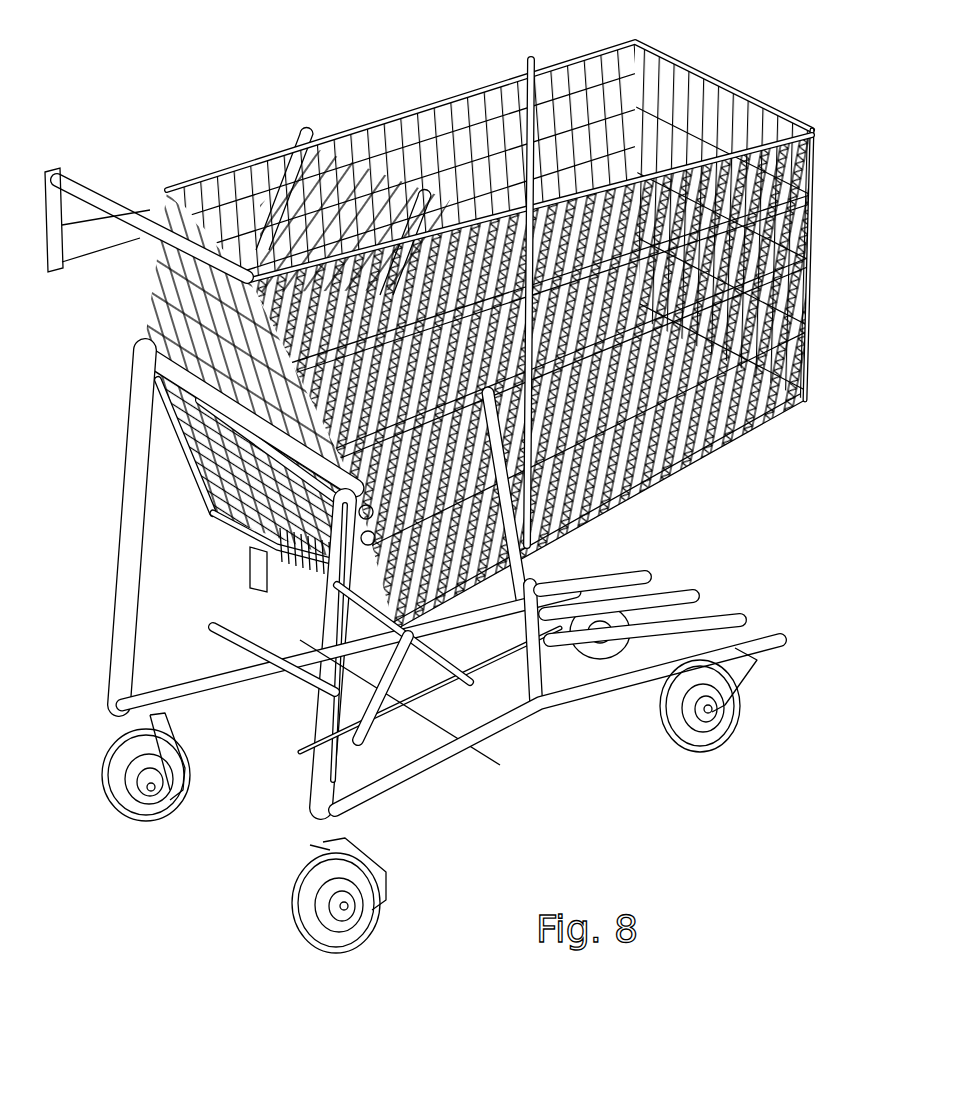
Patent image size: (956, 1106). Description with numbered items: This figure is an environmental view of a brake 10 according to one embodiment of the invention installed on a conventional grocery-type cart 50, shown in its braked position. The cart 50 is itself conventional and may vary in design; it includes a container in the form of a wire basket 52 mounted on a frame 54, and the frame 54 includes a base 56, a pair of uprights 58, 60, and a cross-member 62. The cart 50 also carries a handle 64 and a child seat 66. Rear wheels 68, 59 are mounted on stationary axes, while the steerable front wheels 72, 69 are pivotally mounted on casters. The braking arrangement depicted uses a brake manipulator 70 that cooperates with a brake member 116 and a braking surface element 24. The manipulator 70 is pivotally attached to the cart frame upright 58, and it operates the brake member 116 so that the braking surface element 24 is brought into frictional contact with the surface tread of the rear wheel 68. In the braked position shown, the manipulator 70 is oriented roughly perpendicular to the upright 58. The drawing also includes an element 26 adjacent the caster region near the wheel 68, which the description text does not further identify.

The brake 10 is at (265, 613).
The braking surface element 24 is at (307, 853).
The link member 26 is at (385, 808).
The cart 50 is at (377, 90).
The wire basket 52 is at (693, 60).
The frame 54 is at (725, 582).
The base 56 is at (563, 720).
The upright 58 is at (307, 780).
The rear wheel 59 is at (100, 773).
The upright 60 is at (110, 657).
The cross-member 62 is at (127, 335).
The handle 64 is at (72, 183).
The child seat 66 is at (250, 166).
The rear wheel 68 is at (293, 907).
The front wheel 69 is at (667, 577).
The brake manipulator 70 is at (213, 500).
The front wheel 72 is at (717, 720).
The brake member 116 is at (340, 733).